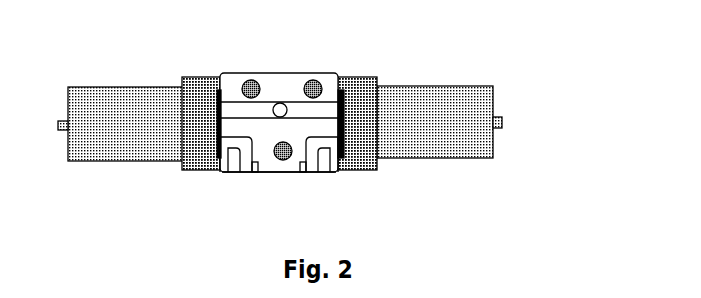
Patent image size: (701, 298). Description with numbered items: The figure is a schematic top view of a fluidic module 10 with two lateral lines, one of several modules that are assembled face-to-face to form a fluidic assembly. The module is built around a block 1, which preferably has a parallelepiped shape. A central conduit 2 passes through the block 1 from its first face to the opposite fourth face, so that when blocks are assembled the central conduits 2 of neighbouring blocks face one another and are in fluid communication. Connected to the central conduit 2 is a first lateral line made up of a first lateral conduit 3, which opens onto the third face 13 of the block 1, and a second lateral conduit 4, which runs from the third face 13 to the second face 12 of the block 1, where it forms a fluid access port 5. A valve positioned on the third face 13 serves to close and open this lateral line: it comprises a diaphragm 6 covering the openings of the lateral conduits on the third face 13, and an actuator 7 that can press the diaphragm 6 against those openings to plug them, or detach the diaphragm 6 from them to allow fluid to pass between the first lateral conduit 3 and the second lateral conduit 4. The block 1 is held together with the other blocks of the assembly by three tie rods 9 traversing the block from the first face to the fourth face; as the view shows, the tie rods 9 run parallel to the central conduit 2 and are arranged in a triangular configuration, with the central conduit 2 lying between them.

The block 1 is at (343, 173).
The central conduit 2 is at (283, 107).
The first lateral conduit 3 is at (232, 105).
The second lateral conduit 4 is at (235, 146).
The fluid access port 5 is at (243, 173).
The diaphragm 6 is at (342, 120).
The actuator 7 is at (428, 113).
The tie rods 9 is at (252, 86).
The fluidic module with two lateral lines 10 is at (536, 124).
The second face 12 is at (277, 173).
The third face 13 is at (218, 77).